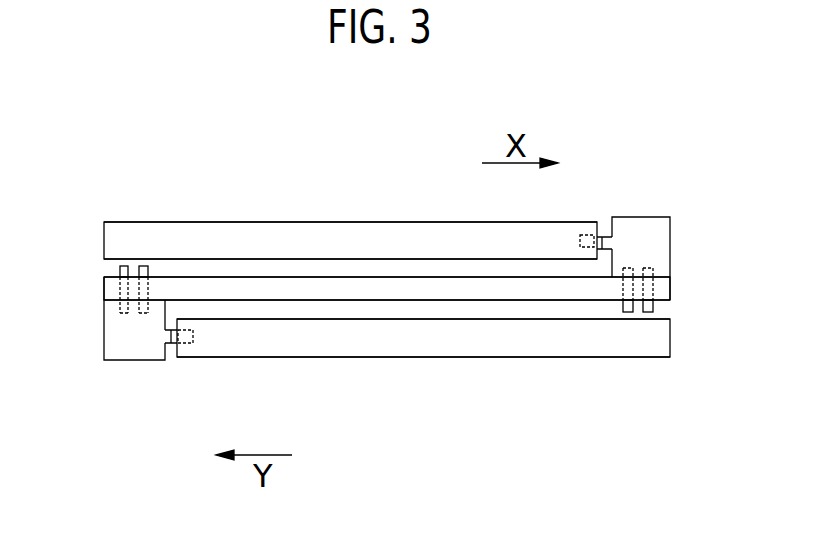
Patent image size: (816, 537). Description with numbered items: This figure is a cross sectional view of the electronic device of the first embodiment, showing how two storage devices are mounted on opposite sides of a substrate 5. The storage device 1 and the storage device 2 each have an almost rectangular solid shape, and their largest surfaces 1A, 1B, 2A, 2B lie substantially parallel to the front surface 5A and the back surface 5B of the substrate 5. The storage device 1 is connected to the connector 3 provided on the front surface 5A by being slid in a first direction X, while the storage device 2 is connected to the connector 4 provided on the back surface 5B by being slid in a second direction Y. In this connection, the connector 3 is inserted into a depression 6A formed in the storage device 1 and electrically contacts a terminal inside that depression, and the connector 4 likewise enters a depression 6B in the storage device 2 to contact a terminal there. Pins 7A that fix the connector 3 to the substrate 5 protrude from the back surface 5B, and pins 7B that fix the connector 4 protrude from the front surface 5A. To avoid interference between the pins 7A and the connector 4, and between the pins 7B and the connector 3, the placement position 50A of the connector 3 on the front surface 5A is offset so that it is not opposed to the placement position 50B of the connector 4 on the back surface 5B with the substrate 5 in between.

The storage device 1 is at (425, 232).
The largest surface 1A is at (307, 222).
The largest surface 1B is at (356, 260).
The storage device 2 is at (570, 345).
The largest surface 2A is at (482, 320).
The largest surface 2B is at (408, 357).
The connector 3 is at (605, 237).
The connector 4 is at (170, 345).
The substrate 5 is at (661, 292).
The front surface 5A is at (237, 277).
The back surface 5B is at (303, 300).
The depression 6A is at (574, 236).
The depression 6B is at (203, 341).
The pins 7A is at (657, 307).
The pins 7B is at (120, 269).
The placement position 50A is at (666, 270).
The placement position 50B is at (112, 303).